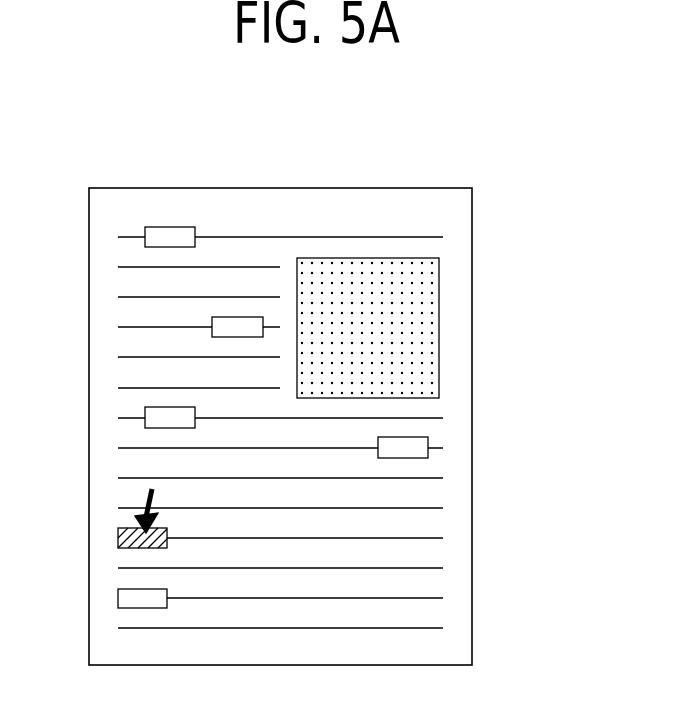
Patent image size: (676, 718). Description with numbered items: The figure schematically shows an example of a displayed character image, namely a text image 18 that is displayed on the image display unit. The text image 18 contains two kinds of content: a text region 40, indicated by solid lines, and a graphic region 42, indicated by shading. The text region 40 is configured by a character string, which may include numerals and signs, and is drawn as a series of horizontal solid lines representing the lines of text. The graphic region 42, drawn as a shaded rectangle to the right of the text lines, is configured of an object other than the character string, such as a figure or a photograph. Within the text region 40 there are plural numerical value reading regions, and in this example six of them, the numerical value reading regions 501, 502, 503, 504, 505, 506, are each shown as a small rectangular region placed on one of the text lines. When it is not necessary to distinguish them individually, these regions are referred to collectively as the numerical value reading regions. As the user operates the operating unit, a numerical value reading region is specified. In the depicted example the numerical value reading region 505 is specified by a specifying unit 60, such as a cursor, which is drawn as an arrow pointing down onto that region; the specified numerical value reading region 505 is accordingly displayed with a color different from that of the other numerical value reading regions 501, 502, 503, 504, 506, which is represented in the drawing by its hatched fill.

The text image 18 is at (500, 196).
The text region 40 is at (252, 237).
The graphic region 42 is at (405, 329).
The numerical value reading region 501 is at (163, 230).
The numerical value reading region 502 is at (228, 328).
The numerical value reading region 503 is at (155, 417).
The numerical value reading region 504 is at (415, 448).
The numerical value reading region 505 is at (122, 533).
The numerical value reading region 506 is at (136, 597).
The specifying unit 60 is at (146, 499).